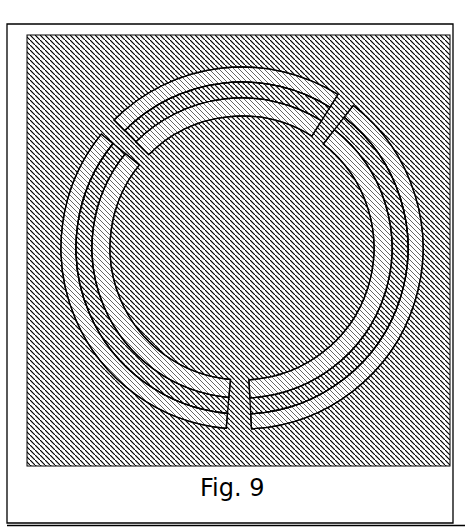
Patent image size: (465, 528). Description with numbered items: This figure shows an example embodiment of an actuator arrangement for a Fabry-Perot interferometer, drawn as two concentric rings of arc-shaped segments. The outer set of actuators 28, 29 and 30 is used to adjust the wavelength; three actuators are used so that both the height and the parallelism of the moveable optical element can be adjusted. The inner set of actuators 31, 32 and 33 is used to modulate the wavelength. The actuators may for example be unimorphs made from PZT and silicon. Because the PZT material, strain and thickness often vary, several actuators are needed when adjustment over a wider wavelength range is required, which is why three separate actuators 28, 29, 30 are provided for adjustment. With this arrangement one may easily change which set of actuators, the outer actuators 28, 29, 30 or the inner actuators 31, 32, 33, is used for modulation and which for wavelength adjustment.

The actuator 28 is at (272, 83).
The actuator 29 is at (77, 300).
The actuator 30 is at (370, 365).
The actuator 31 is at (237, 110).
The actuator 32 is at (107, 293).
The actuator 33 is at (352, 325).